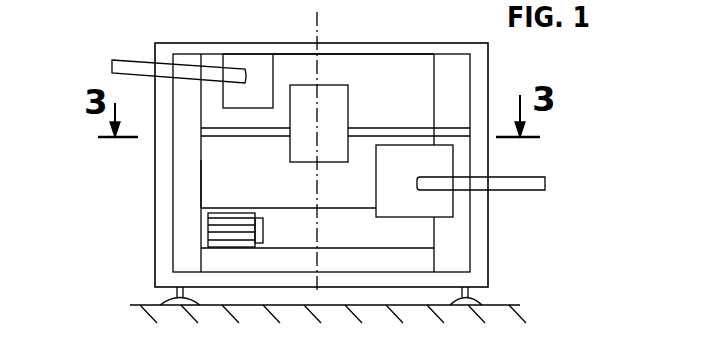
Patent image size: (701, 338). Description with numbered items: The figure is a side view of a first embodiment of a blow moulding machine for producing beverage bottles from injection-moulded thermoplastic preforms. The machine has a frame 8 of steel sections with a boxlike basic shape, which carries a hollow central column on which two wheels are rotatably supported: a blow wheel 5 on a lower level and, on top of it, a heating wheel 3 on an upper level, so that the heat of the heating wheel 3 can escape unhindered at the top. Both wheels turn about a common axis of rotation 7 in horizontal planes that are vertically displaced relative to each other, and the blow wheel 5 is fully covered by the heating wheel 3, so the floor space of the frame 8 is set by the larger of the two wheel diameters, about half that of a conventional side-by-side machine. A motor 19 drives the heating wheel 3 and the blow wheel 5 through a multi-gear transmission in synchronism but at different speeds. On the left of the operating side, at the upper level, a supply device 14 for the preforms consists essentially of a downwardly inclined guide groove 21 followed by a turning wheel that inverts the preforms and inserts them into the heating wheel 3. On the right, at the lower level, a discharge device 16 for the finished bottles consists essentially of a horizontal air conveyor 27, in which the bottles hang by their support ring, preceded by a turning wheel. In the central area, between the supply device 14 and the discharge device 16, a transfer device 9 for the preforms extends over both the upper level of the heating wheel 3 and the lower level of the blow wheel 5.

The heating wheel 3 is at (408, 77).
The blow wheel 5 is at (237, 172).
The common axis of rotation 7 is at (317, 15).
The frame 8 is at (488, 245).
The transfer device 9 is at (302, 103).
The supply device 14 is at (253, 63).
The discharge device 16 is at (443, 203).
The motor 19 is at (222, 229).
The guide groove 21 is at (112, 64).
The air conveyor 27 is at (547, 180).